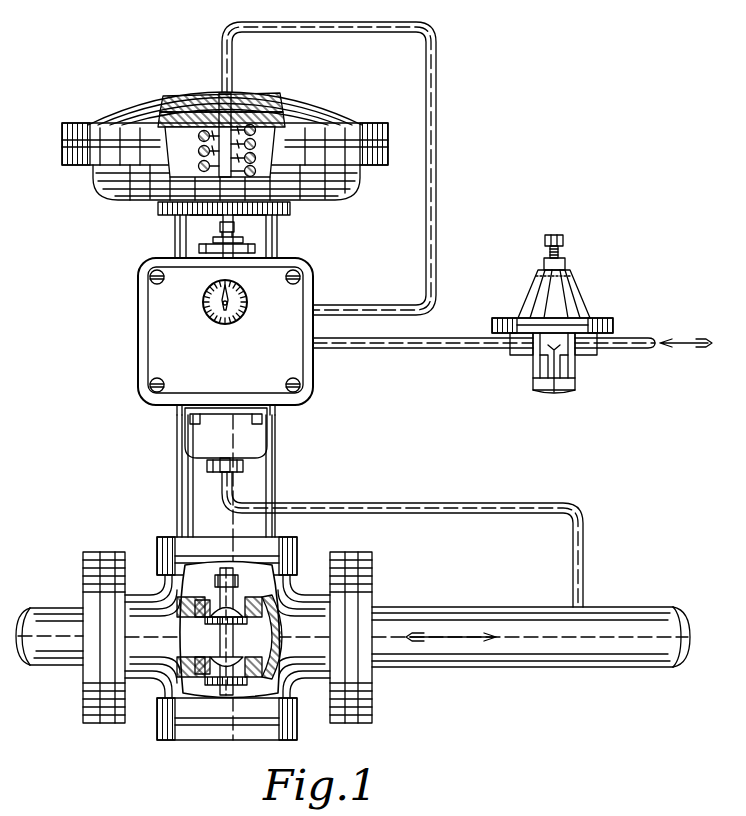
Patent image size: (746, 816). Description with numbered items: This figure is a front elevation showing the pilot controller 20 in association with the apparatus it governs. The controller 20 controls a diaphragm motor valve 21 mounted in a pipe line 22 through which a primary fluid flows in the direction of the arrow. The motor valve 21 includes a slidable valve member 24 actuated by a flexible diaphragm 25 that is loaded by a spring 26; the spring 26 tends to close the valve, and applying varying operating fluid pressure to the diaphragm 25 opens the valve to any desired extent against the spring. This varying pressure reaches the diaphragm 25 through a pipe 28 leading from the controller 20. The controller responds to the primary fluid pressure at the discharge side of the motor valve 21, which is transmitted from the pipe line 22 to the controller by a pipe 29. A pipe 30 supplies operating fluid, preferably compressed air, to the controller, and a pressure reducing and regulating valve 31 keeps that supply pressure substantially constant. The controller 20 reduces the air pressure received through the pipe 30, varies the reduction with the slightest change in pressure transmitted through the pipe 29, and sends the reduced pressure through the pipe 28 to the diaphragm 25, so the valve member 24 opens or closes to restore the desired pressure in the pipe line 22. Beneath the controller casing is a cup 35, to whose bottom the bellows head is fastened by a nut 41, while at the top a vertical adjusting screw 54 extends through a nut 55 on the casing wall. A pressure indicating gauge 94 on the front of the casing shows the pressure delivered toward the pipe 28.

The pilot controller 20 is at (158, 337).
The diaphragm motor valve 21 is at (182, 495).
The pipe line 22 is at (50, 666).
The slidable valve member 24 is at (221, 643).
The flexible diaphragm 25 is at (181, 112).
The spring 26 is at (201, 161).
The pipe 28 is at (437, 145).
The pipe 29 is at (456, 503).
The pipe 30 is at (413, 349).
The pressure reducing and regulating valve 31 is at (585, 300).
The cup 35 is at (226, 433).
The nut 41 is at (206, 468).
The vertical adjusting screw 54 is at (215, 232).
The nut 55 is at (200, 250).
The pressure indicating gauge 94 is at (233, 316).